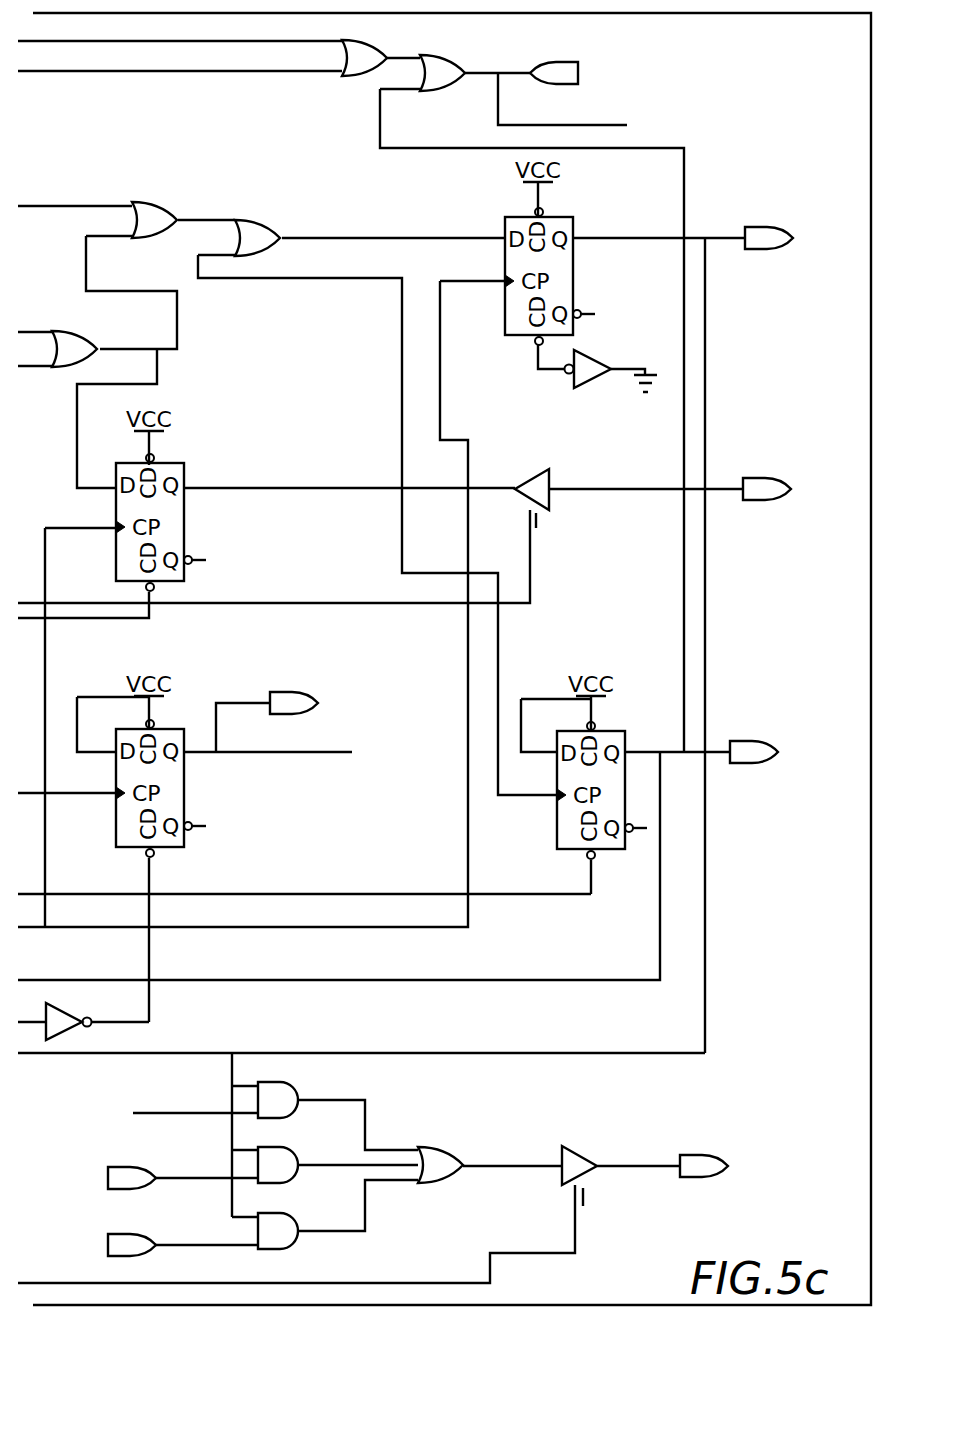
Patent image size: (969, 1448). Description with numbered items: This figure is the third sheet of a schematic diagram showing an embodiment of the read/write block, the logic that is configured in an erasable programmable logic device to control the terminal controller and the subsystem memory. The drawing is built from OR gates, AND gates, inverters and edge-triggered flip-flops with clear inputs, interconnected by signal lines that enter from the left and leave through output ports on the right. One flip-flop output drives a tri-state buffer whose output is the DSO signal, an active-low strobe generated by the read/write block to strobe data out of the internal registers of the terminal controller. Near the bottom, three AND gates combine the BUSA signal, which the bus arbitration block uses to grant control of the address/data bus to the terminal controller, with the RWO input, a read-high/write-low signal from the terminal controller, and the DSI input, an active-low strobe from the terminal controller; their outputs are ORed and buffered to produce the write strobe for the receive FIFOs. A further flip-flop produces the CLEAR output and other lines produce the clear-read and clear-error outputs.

The DSO output DSO is at (665, 498).
The clear output port CLEAR is at (742, 755).
The BUSA output BUSA is at (162, 1104).
The RWO input RWO is at (174, 1170).
The DSI input DSI is at (174, 1236).